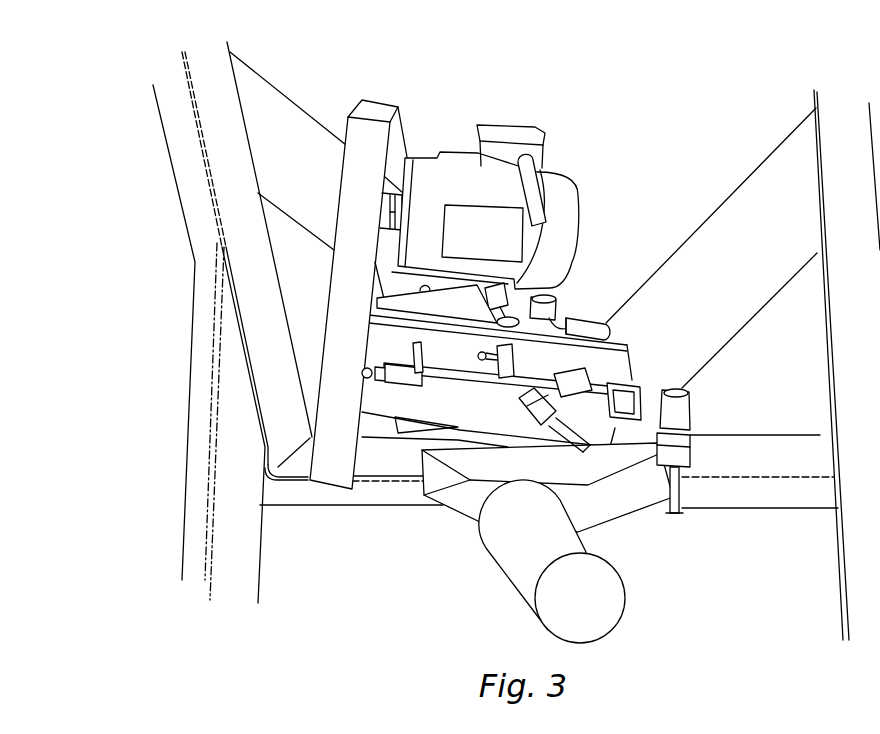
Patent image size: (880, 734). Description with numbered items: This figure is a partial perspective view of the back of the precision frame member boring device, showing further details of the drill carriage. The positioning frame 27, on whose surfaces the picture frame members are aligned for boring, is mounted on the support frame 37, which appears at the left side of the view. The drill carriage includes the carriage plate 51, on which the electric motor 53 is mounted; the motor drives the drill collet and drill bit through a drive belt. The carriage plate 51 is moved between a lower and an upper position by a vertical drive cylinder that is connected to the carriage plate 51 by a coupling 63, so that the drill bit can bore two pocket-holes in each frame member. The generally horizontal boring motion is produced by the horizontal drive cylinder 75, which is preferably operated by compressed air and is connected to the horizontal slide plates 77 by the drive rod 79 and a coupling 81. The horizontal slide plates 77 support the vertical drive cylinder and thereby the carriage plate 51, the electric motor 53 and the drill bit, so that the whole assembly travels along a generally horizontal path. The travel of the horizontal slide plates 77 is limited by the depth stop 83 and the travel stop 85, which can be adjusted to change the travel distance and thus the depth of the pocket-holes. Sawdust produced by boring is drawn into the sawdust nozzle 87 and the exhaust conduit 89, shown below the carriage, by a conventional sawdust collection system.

The positioning frame 27 is at (305, 78).
The support frame 37 is at (218, 149).
The carriage plate 51 is at (407, 282).
The electric motor 53 is at (431, 175).
The coupling 63 is at (503, 297).
The horizontal drive cylinder 75 is at (612, 362).
The horizontal slide plates 77 is at (437, 304).
The drive rod 79 is at (468, 386).
The coupling 81 is at (410, 379).
The depth stop 83 is at (482, 356).
The travel stop 85 is at (378, 367).
The sawdust nozzle 87 is at (470, 502).
The exhaust conduit 89 is at (528, 573).